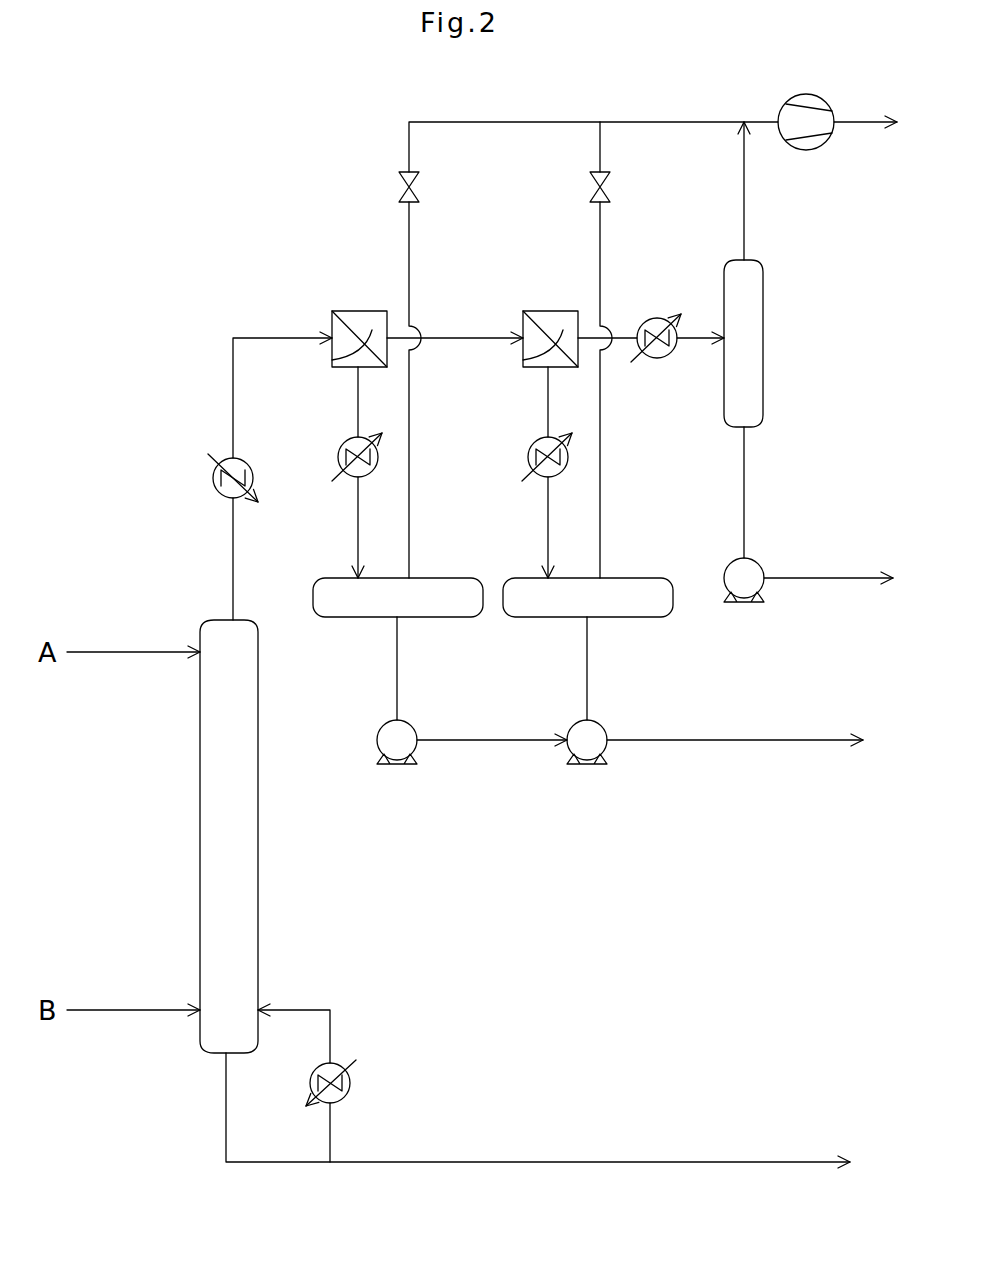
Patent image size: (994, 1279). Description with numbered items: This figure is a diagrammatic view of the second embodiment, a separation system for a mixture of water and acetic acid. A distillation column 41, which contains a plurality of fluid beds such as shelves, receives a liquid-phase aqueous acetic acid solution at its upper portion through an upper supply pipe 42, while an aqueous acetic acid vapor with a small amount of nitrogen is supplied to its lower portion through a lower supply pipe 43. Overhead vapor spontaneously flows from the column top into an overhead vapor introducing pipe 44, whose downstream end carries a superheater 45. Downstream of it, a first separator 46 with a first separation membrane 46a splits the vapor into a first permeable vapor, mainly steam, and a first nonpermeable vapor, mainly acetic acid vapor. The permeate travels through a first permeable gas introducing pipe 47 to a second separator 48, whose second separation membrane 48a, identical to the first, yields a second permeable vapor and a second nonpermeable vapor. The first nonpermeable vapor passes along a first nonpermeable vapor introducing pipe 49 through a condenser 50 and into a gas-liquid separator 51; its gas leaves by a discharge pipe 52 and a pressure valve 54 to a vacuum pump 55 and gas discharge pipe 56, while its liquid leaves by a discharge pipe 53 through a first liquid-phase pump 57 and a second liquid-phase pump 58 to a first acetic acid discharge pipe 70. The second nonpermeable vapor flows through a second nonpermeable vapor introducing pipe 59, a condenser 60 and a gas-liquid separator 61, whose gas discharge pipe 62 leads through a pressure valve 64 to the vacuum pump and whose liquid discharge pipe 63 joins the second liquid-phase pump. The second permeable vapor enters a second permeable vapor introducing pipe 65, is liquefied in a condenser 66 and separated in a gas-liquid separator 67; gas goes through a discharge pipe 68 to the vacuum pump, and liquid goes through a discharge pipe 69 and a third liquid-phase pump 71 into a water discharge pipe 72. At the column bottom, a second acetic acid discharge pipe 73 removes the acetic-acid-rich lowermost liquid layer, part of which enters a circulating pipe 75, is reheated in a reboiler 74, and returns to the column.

The distillation column 41 is at (200, 823).
The upper supply pipe 42 is at (144, 652).
The lower supply pipe 43 is at (142, 1010).
The overhead vapor introducing pipe 44 is at (230, 533).
The superheater 45 is at (224, 464).
The first separator 46 is at (355, 311).
The first separation membrane 46a is at (340, 352).
The first permeable gas introducing pipe 47 is at (447, 338).
The second separator 48 is at (540, 311).
The second separation membrane 48a is at (530, 362).
The first nonpermeable vapor introducing pipe 49 is at (356, 395).
The condenser 50 is at (340, 455).
The gas-liquid separator 51 is at (373, 620).
The discharge pipe 52 is at (410, 543).
The discharge pipe 53 is at (395, 680).
The pressure valve 54 is at (420, 195).
The vacuum pump 55 is at (792, 100).
The gas discharge pipe 56 is at (845, 128).
The first liquid-phase pump 57 is at (403, 762).
The second liquid-phase pump 58 is at (590, 762).
The second nonpermeable vapor introducing pipe 59 is at (545, 412).
The condenser 60 is at (533, 470).
The gas-liquid separator 61 is at (553, 620).
The discharge pipe 62 is at (603, 527).
The discharge pipe 63 is at (585, 677).
The pressure valve 64 is at (610, 183).
The second permeable vapor introducing pipe 65 is at (625, 335).
The condenser 66 is at (660, 360).
The gas-liquid separator 67 is at (765, 336).
The discharge pipe 68 is at (747, 212).
The discharge pipe 69 is at (747, 513).
The first acetic acid discharge pipe 70 is at (690, 742).
The third liquid-phase pump 71 is at (745, 600).
The water discharge pipe 72 is at (818, 580).
The second acetic acid discharge pipe 73 is at (528, 1162).
The reboiler 74 is at (352, 1078).
The circulating pipe 75 is at (338, 1022).